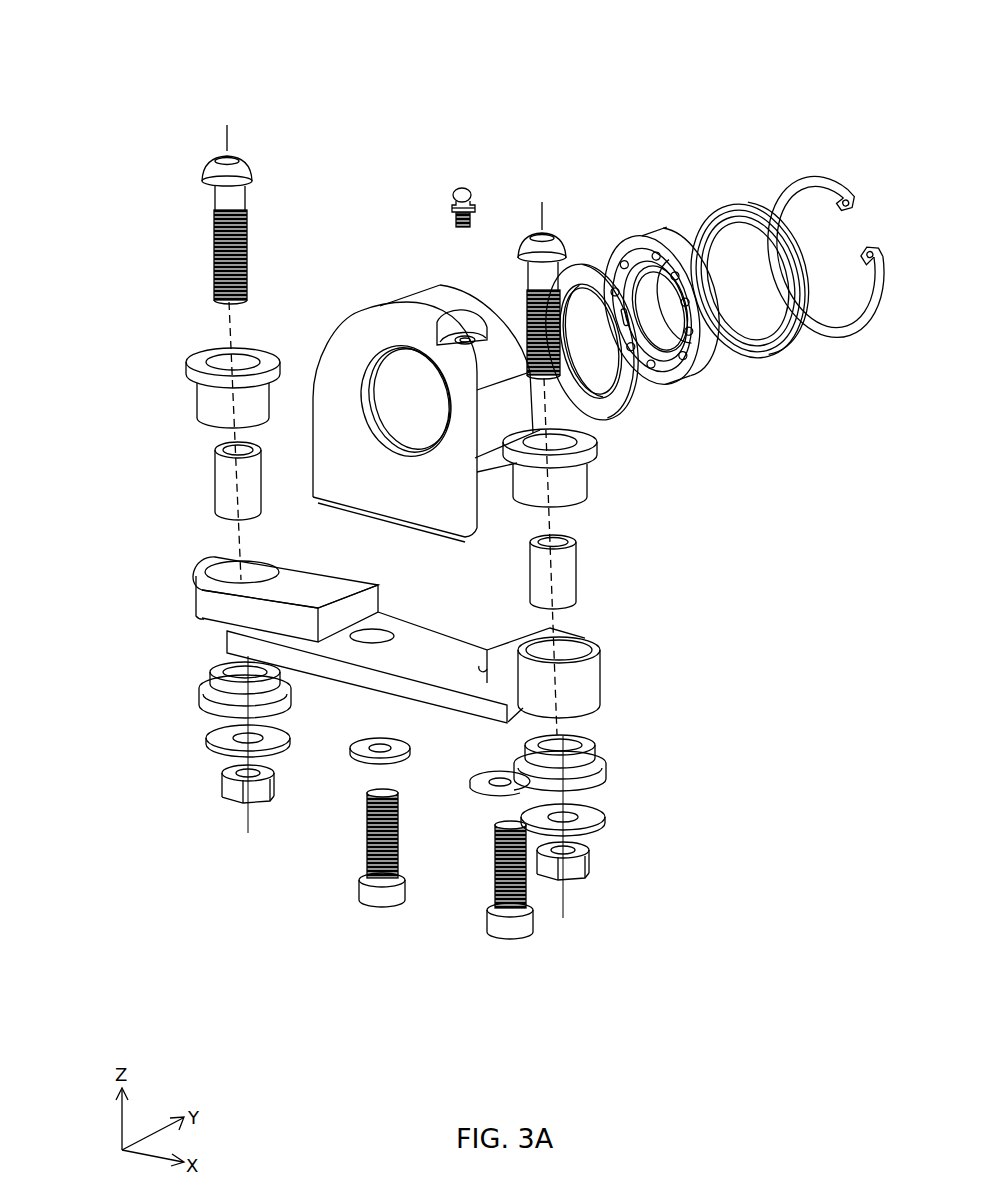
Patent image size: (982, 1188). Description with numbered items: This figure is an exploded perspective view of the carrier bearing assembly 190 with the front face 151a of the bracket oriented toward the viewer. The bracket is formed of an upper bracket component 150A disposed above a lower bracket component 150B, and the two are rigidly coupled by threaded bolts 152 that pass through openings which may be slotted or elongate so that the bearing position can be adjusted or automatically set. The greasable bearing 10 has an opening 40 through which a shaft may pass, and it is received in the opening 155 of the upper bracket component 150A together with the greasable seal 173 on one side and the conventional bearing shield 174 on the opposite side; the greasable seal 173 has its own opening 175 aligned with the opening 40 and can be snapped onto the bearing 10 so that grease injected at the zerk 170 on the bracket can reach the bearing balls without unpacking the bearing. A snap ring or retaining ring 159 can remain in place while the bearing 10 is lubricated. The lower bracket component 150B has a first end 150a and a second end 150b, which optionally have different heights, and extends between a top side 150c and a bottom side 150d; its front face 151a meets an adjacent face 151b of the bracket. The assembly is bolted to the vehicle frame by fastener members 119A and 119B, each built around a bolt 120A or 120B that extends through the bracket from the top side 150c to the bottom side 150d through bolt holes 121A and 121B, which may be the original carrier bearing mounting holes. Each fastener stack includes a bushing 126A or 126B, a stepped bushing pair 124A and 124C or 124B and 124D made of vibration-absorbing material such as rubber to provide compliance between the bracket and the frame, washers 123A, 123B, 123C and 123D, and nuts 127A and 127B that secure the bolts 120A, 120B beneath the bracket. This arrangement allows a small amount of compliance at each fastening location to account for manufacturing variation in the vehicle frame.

The carrier bearing assembly 190 is at (674, 74).
The fastener member 119A is at (234, 98).
The fastener member 119B is at (559, 163).
The bolt 120A is at (240, 156).
The bolt 120B is at (520, 236).
The zerk 170 is at (453, 190).
The upper bracket component 150A is at (397, 523).
The opening 155 is at (398, 421).
The stepped bushing 124A is at (197, 367).
The stepped bushing 124B is at (589, 469).
The stepped bushing 124C is at (201, 693).
The stepped bushing 124D is at (608, 771).
The bushing 126A is at (217, 450).
The bushing 126B is at (574, 538).
The bolt hole 121A is at (238, 568).
The bolt hole 121B is at (566, 649).
The greasable seal 173 is at (581, 262).
The opening 175 is at (590, 341).
The greasable bearing 10 is at (653, 233).
The opening 40 is at (659, 310).
The bearing shield 174 is at (718, 210).
The snap ring 159 is at (791, 176).
The lower bracket component 150B is at (737, 623).
The first end 150a is at (197, 593).
The second end 150b is at (592, 687).
The top side 150c is at (438, 658).
The bottom side 150d is at (588, 708).
The front face 151a is at (375, 677).
The bracket boss side face 151b is at (381, 598).
The washer 123A is at (216, 737).
The washer 123B is at (600, 817).
The washer 123C is at (356, 762).
The washer 123D is at (478, 795).
The nut 127A is at (234, 793).
The nut 127B is at (589, 863).
The threaded bolt 152 is at (361, 903).